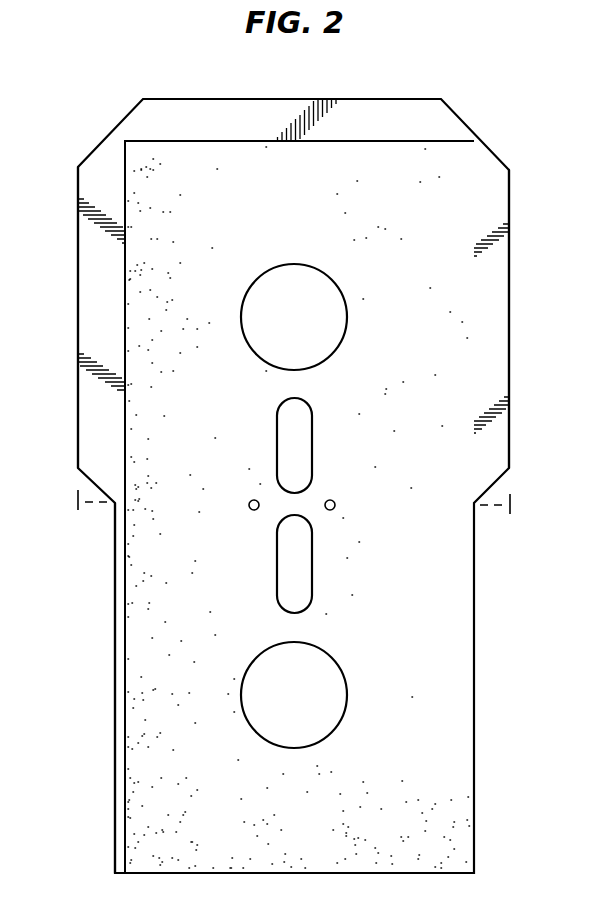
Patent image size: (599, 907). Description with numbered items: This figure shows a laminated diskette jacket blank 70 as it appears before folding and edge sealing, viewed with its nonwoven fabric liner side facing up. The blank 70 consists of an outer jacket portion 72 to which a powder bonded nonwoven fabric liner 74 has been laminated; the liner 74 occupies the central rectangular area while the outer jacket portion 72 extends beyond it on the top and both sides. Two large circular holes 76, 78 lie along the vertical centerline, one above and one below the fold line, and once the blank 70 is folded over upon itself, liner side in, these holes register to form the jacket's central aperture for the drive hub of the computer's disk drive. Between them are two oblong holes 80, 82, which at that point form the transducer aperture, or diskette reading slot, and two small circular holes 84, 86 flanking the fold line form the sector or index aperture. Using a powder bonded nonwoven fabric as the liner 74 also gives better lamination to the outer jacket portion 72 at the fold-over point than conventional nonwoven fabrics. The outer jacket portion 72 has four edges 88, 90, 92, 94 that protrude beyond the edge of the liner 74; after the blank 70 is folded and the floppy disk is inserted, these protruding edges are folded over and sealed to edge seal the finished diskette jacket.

The diskette jacket blank 70 is at (474, 778).
The outer jacket portion 72 is at (510, 305).
The powder bonded nonwoven fabric liner 74 is at (458, 605).
The large circular hole 76 is at (260, 735).
The large circular hole 78 is at (268, 366).
The oblong hole 80 is at (277, 598).
The oblong hole 82 is at (277, 460).
The small circular hole 84 is at (335, 508).
The small circular hole 86 is at (250, 511).
The edge 88 is at (500, 215).
The edge 90 is at (340, 97).
The edge 92 is at (77, 245).
The edge 94 is at (115, 527).